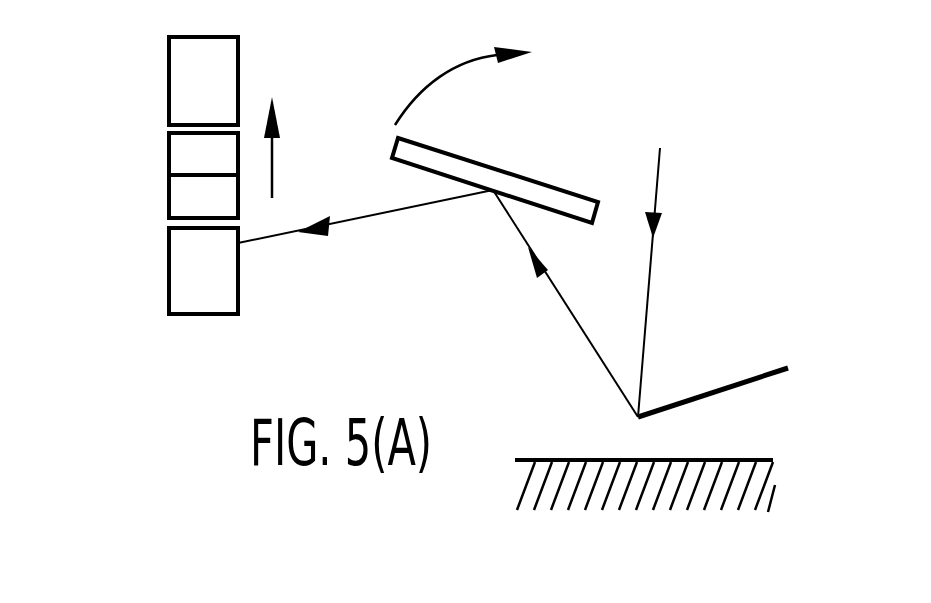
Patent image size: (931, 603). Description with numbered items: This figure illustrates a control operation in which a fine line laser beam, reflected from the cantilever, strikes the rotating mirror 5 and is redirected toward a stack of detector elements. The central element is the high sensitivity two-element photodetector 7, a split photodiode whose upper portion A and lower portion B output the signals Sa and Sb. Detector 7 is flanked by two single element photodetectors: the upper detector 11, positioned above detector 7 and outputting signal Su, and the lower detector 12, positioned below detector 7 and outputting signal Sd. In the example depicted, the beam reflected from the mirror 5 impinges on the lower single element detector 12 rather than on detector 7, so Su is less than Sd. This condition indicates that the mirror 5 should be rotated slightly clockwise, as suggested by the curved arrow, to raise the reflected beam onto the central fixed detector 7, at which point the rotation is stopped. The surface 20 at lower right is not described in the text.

The rotating mirror 5 is at (577, 195).
The two-element photodetector 7 is at (113, 125).
The upper single element photodetector 11 is at (168, 89).
The lower single element photodetector 12 is at (168, 272).
The object surface 20 is at (647, 423).